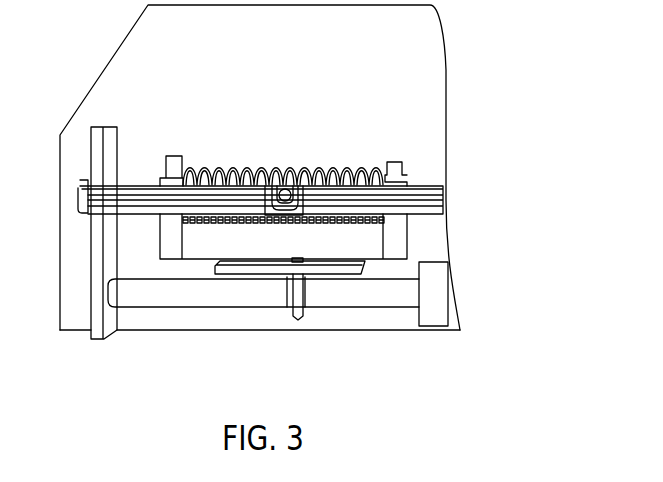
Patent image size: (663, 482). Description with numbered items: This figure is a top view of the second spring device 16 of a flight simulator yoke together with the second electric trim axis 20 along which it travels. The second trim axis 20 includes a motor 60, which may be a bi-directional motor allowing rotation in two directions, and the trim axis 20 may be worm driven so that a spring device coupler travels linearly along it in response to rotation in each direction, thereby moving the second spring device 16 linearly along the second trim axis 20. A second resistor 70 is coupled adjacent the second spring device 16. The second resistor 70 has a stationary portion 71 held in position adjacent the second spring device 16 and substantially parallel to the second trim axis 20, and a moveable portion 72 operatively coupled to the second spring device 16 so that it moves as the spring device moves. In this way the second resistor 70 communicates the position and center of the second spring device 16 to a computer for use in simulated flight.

The second spring device 16 is at (283, 243).
The second electric trim axis 20 is at (163, 298).
The motor 60 is at (433, 313).
The second resistor 70 is at (227, 158).
The stationary portion 71 is at (348, 190).
The moveable portion 72 is at (285, 193).